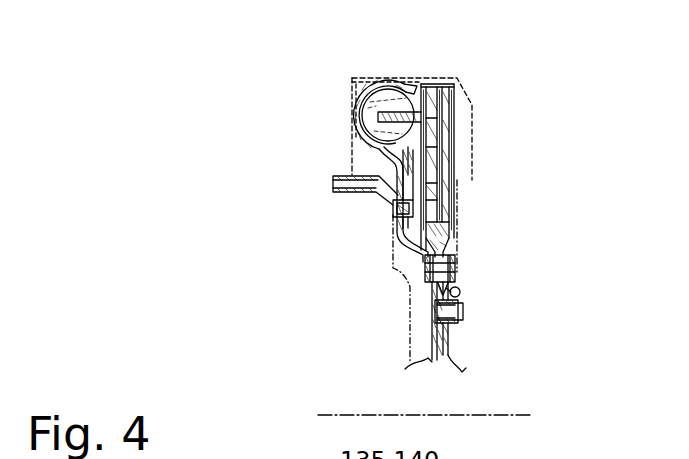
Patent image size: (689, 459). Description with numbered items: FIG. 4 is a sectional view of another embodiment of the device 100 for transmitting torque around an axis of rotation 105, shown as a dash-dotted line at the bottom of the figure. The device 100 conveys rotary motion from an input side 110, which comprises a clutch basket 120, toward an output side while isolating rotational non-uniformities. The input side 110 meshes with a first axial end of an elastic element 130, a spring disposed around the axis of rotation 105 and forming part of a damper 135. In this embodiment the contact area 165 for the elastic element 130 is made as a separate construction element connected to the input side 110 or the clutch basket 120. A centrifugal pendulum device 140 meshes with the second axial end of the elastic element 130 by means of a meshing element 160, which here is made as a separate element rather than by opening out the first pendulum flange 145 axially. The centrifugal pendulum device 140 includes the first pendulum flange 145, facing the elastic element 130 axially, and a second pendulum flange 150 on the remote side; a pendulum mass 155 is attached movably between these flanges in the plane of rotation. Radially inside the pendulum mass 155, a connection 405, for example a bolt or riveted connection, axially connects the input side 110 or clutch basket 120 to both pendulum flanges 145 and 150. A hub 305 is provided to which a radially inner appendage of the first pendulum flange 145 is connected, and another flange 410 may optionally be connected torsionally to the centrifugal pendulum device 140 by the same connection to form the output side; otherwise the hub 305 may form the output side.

The device 100 is at (503, 68).
The axis of rotation 105 is at (490, 414).
The input side 110 is at (318, 171).
The clutch basket 120 is at (335, 178).
The elastic element 130 is at (378, 124).
The damper 135 is at (382, 73).
The centrifugal pendulum device 140 is at (438, 77).
The first pendulum flange 145 is at (425, 95).
The second pendulum flange 150 is at (450, 142).
The pendulum mass 155 is at (440, 118).
The meshing element 160 is at (394, 200).
The contact area 165 is at (358, 87).
The hub 305 is at (458, 326).
The connection 405 is at (466, 262).
The flange 410 is at (460, 291).